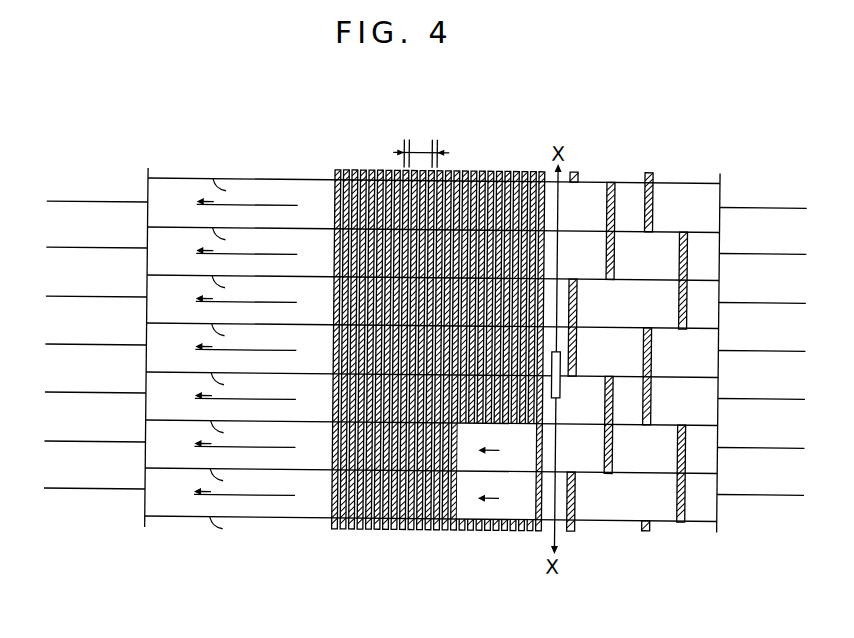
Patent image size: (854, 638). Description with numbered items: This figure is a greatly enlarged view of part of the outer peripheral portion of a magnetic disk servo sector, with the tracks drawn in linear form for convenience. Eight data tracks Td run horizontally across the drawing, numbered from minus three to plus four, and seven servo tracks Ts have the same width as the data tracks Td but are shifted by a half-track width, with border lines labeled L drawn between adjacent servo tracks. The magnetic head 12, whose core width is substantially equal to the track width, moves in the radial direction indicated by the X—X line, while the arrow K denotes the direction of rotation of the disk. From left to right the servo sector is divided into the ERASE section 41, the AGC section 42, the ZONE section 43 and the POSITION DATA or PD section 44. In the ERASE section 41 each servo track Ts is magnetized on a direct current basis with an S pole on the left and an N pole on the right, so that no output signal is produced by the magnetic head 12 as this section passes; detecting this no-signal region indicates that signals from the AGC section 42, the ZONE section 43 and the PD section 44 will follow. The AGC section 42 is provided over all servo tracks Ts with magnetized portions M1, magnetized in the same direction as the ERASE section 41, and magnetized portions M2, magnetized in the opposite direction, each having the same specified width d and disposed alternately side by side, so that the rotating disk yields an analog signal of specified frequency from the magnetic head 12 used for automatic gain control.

The magnetic head 12 is at (558, 394).
The ERASE section 41 is at (322, 557).
The AGC section 42 is at (445, 557).
The ZONE section 43 is at (533, 557).
The POSITION DATA section 44 is at (717, 557).
The data track Td is at (73, 160).
The servo track Ts is at (218, 167).
The direction of rotation K is at (122, 137).
The magnetized portion M1 is at (379, 168).
The magnetized portion M2 is at (347, 168).
The width of magnetized portion d is at (421, 137).